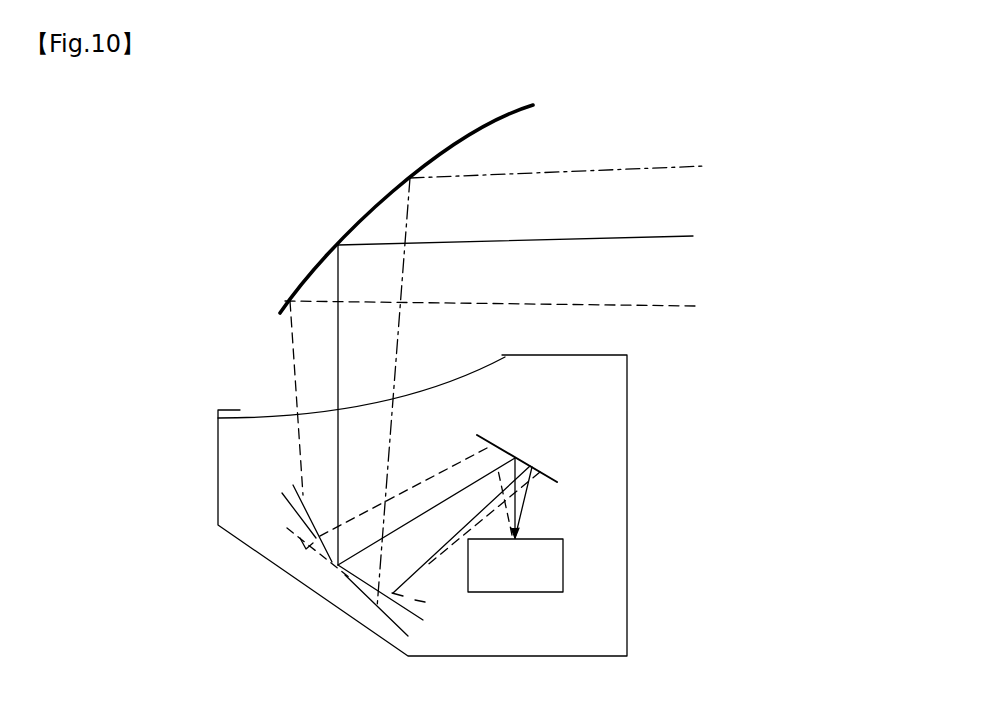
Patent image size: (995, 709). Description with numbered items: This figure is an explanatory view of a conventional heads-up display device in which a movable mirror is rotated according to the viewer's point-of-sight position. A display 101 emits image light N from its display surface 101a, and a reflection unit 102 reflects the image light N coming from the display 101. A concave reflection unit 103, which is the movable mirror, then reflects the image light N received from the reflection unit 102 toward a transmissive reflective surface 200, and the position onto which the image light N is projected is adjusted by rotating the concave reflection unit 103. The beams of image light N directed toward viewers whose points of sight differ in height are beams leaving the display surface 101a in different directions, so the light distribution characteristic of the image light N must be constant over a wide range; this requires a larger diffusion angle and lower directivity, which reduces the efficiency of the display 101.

The transmissive reflective surface 200 is at (437, 157).
The image light N is at (500, 178).
The reflection unit 102 is at (520, 456).
The display surface 101a is at (560, 540).
The concave reflection unit 103 is at (264, 498).
The display 101 is at (468, 591).